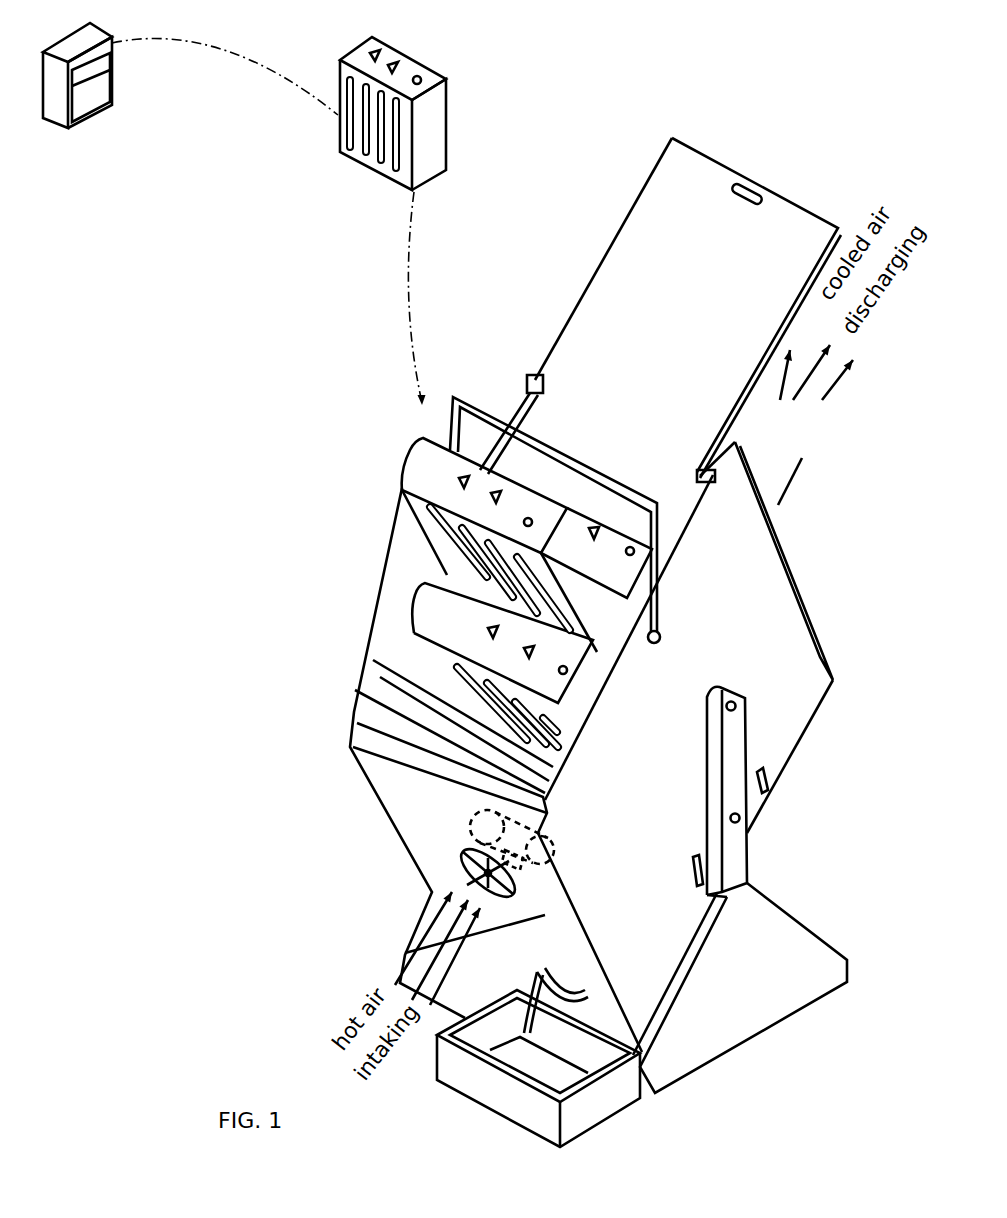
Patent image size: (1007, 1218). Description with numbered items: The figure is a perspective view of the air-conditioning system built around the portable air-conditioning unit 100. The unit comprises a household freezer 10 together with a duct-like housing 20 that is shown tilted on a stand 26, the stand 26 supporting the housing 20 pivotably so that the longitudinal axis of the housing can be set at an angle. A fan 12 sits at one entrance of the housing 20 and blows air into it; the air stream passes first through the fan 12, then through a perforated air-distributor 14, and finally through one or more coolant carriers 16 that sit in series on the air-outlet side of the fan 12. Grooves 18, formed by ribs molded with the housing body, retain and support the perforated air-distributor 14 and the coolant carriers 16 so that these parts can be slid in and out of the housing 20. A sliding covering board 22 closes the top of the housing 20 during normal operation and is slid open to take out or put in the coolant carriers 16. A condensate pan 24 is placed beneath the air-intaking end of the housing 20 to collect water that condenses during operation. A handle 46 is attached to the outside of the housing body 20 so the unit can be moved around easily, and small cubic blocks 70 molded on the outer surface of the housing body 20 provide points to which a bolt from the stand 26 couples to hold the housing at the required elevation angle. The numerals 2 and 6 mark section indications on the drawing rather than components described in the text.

The portable air-conditioning unit 100 is at (295, 722).
The household freezer 10 is at (88, 105).
The coolant carriers 16 is at (370, 150).
The section indicator 6 is at (343, 92).
The sliding covering board 22 is at (697, 177).
The handle 46 is at (463, 398).
The grooves 18 is at (437, 592).
The perforated air-distributor 14 is at (393, 680).
The duct-like housing 20 is at (807, 670).
The section line 2 is at (513, 967).
The fan 12 is at (548, 847).
The small cubic blocks 70 is at (760, 767).
The stand 26 is at (787, 928).
The condensate pan 24 is at (603, 1107).